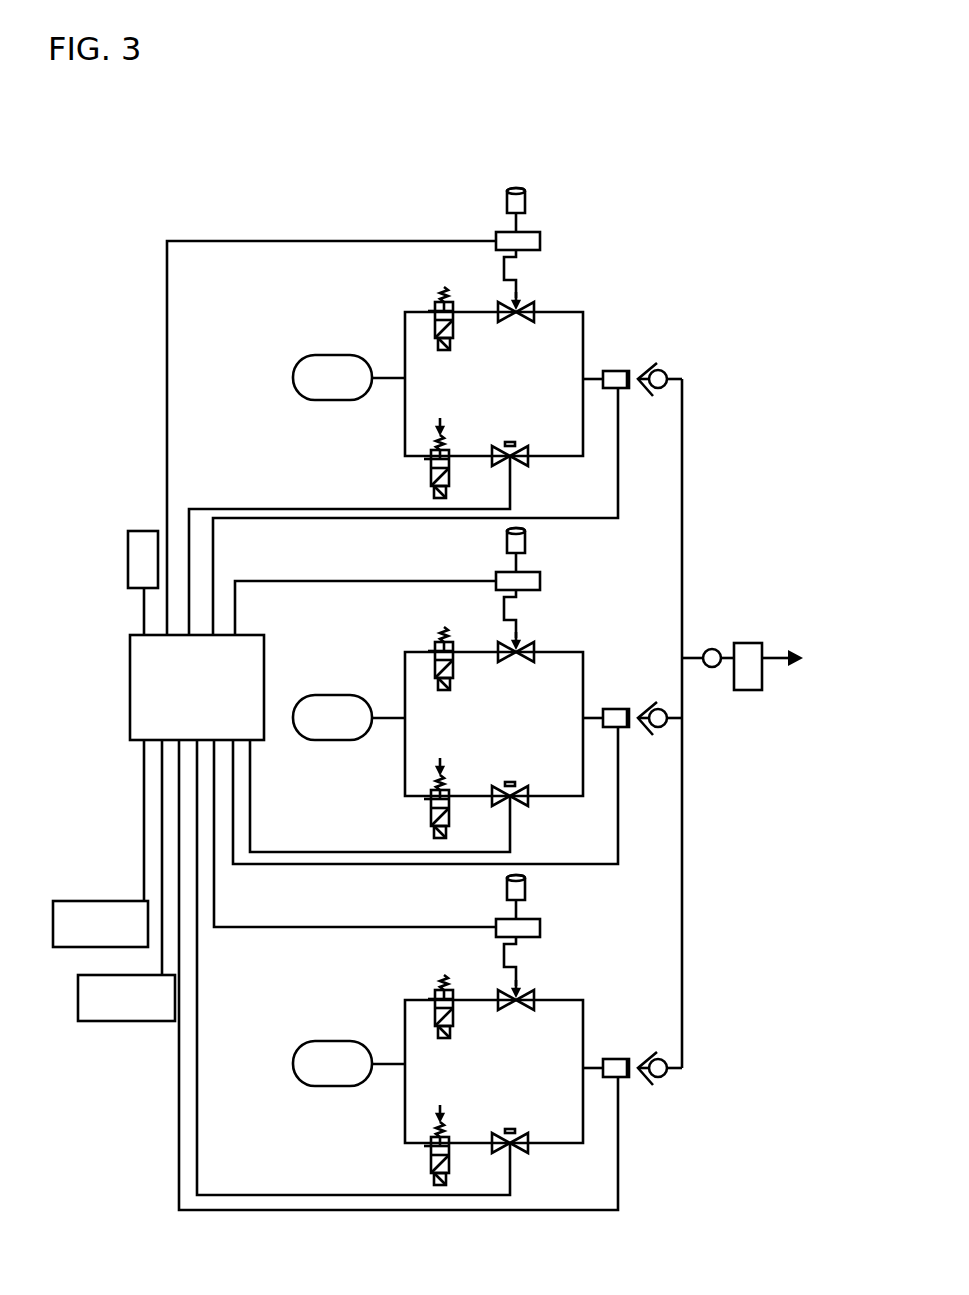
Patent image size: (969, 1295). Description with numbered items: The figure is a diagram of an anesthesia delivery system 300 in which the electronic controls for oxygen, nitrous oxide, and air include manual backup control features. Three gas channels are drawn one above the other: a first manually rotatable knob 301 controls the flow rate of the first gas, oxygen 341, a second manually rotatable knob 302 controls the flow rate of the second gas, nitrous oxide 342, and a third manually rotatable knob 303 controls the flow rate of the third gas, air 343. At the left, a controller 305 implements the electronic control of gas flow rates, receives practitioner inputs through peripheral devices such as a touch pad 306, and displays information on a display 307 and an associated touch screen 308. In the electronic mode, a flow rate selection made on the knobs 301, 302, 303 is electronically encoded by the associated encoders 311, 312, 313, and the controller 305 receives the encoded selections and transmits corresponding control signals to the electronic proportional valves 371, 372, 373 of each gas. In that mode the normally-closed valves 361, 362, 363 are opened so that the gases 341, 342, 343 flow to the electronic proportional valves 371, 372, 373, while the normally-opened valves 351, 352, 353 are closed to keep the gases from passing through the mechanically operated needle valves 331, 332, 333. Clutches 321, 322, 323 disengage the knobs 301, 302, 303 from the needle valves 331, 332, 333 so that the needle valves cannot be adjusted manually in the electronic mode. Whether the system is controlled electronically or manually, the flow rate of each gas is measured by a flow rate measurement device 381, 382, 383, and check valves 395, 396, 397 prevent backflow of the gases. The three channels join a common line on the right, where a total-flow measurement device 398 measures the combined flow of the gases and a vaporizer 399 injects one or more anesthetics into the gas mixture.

The anesthesia delivery system 300 is at (743, 57).
The first manually rotatable knob 301 is at (525, 200).
The second manually rotatable knob 302 is at (525, 540).
The third manually rotatable knob 303 is at (507, 892).
The controller 305 is at (130, 676).
The touch pad 306 is at (138, 531).
The display 307 is at (63, 901).
The touch screen 308 is at (93, 1021).
The encoder 311 is at (532, 232).
The encoder 312 is at (500, 572).
The encoder 313 is at (526, 919).
The clutch 321 is at (519, 269).
The clutch 322 is at (519, 609).
The clutch 323 is at (519, 957).
The mechanically operated needle valve 331 is at (530, 304).
The mechanically operated needle valve 332 is at (530, 644).
The mechanically operated needle valve 333 is at (530, 992).
The oxygen 341 is at (308, 355).
The nitrous oxide 342 is at (310, 695).
The air 343 is at (308, 1041).
The normally-opened valve 351 is at (436, 300).
The normally-opened valve 352 is at (436, 640).
The normally-opened valve 353 is at (436, 988).
The normally-closed valve 361 is at (431, 478).
The normally-closed valve 362 is at (431, 820).
The normally-closed valve 363 is at (431, 1165).
The electronic proportional valve 371 is at (524, 465).
The electronic proportional valve 372 is at (524, 805).
The electronic proportional valve 373 is at (524, 1152).
The flow rate measurement device 381 is at (618, 370).
The flow rate measurement device 382 is at (616, 709).
The flow rate measurement device 383 is at (612, 1059).
The check valve 395 is at (663, 370).
The check valve 396 is at (656, 727).
The check valve 397 is at (657, 1077).
The total-flow measurement device 398 is at (712, 649).
The vaporizer 399 is at (749, 690).